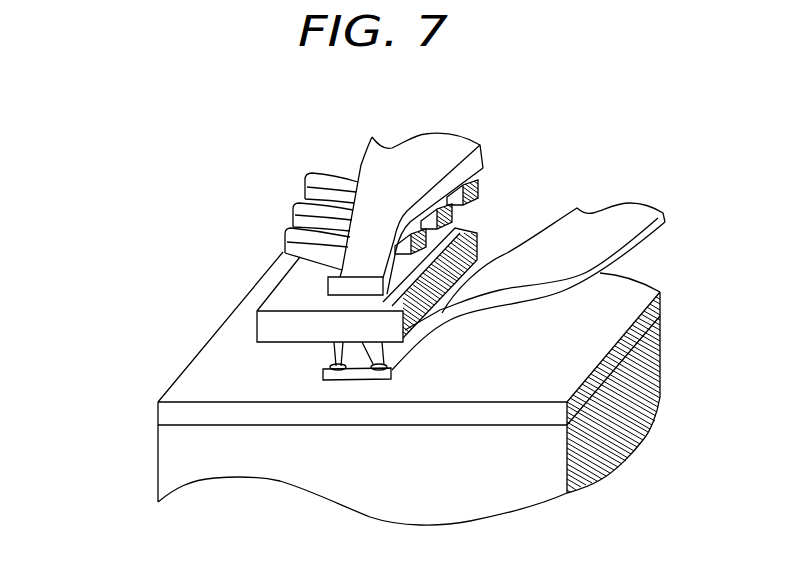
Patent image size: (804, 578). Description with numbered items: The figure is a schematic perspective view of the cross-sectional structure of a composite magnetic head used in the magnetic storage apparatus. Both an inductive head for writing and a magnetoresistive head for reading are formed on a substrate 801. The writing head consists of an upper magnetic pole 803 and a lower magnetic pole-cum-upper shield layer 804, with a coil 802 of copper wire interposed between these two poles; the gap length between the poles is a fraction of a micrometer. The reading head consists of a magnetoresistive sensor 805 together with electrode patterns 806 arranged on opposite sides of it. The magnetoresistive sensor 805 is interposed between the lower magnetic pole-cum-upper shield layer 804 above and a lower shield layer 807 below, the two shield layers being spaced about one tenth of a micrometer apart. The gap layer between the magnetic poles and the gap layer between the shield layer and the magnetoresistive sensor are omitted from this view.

The substrate 801 is at (163, 460).
The coil 802 is at (304, 185).
The upper magnetic pole 803 is at (340, 285).
The lower magnetic pole-cum-upper shield layer 804 is at (268, 330).
The magnetoresistive sensor 805 is at (357, 380).
The electrode patterns 806 is at (331, 351).
The lower shield layer 807 is at (162, 414).